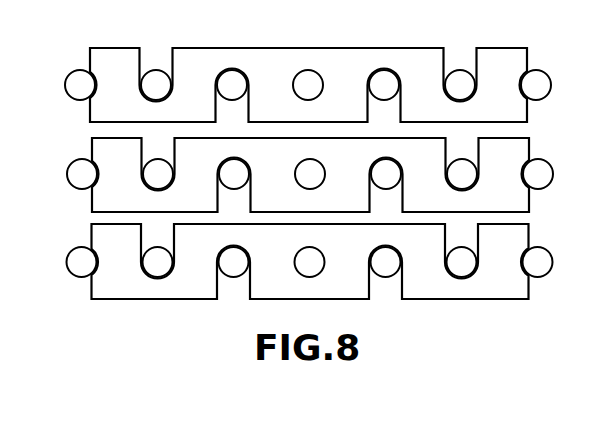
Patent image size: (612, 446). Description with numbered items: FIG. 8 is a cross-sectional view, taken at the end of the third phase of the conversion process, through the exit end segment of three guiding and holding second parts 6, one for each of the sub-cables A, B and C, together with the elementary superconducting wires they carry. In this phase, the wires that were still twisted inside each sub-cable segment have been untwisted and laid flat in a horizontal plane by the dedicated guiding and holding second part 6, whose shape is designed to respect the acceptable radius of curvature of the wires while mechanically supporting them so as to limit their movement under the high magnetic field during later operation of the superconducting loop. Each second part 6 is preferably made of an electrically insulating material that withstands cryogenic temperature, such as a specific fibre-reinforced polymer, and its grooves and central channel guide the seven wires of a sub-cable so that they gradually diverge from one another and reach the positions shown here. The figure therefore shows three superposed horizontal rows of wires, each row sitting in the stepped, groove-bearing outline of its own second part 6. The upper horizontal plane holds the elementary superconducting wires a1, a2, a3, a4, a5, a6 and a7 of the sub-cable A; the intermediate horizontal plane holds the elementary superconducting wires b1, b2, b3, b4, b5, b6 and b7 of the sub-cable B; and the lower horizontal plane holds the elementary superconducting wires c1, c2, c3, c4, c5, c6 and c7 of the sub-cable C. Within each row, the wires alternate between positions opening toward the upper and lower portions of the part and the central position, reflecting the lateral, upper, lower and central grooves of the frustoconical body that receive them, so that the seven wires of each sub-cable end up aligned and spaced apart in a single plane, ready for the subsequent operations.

The guiding and holding second part 6 is at (92, 108).
The elementary superconducting wire a1 is at (80, 85).
The elementary superconducting wire a2 is at (156, 85).
The elementary superconducting wire a3 is at (232, 85).
The elementary superconducting wire a4 is at (308, 85).
The elementary superconducting wire a5 is at (384, 85).
The elementary superconducting wire a6 is at (460, 85).
The elementary superconducting wire a7 is at (536, 85).
The elementary superconducting wire b1 is at (82, 174).
The elementary superconducting wire b2 is at (158, 174).
The elementary superconducting wire b3 is at (234, 174).
The elementary superconducting wire b4 is at (310, 174).
The elementary superconducting wire b5 is at (386, 174).
The elementary superconducting wire b6 is at (462, 174).
The elementary superconducting wire b7 is at (538, 174).
The elementary superconducting wire c1 is at (82, 262).
The elementary superconducting wire c2 is at (158, 262).
The elementary superconducting wire c3 is at (234, 262).
The elementary superconducting wire c4 is at (310, 262).
The elementary superconducting wire c5 is at (386, 262).
The elementary superconducting wire c6 is at (462, 262).
The elementary superconducting wire c7 is at (538, 262).